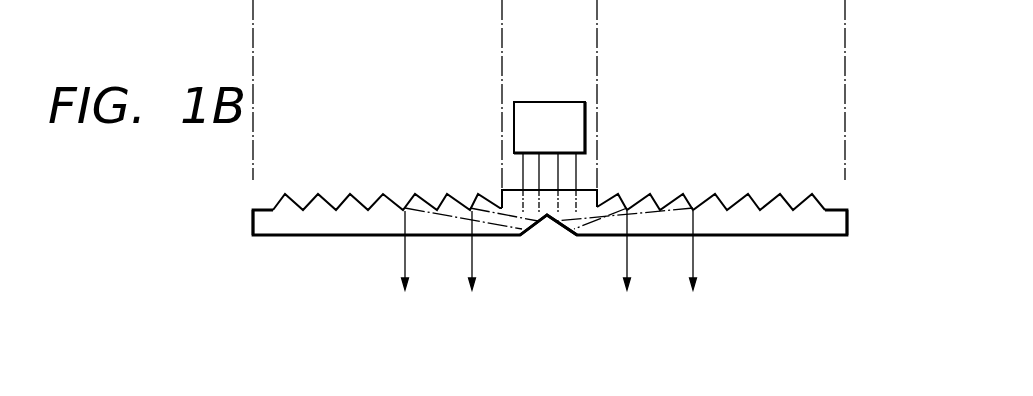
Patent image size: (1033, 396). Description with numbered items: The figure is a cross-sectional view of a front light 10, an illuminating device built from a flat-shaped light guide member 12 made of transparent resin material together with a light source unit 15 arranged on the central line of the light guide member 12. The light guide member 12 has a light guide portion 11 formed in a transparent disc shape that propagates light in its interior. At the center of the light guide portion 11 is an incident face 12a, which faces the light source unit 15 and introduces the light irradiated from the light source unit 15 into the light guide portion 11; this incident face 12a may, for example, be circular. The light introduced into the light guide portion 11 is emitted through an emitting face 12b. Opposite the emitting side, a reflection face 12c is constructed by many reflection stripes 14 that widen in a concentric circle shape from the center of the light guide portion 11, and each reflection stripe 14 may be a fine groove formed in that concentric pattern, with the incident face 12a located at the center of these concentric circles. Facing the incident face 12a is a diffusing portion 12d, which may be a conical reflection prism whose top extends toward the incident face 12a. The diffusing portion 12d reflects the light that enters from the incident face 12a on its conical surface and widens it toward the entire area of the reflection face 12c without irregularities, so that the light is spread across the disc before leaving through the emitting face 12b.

The front light 10 is at (688, 124).
The light guide portion 11 is at (252, 219).
The light guide member 12 is at (322, 246).
The incident face 12a is at (584, 190).
The emitting face 12b is at (820, 237).
The reflection face 12c is at (320, 183).
The diffusing portion 12d is at (532, 236).
The reflection stripe 14 is at (758, 200).
The light source unit 15 is at (558, 110).